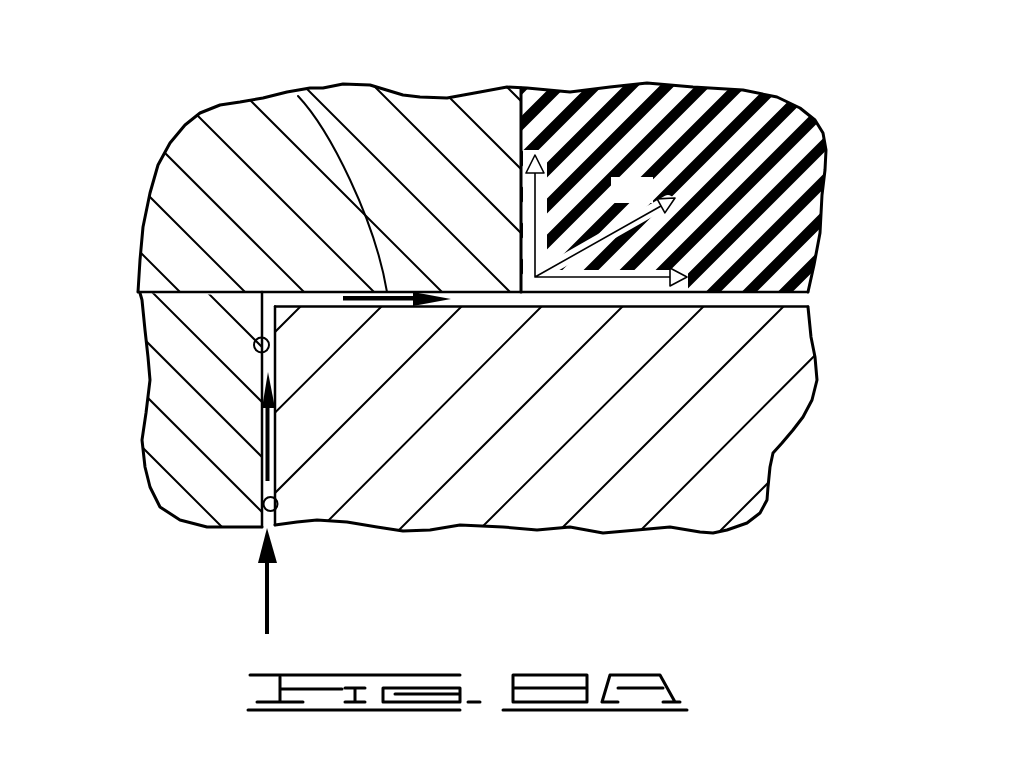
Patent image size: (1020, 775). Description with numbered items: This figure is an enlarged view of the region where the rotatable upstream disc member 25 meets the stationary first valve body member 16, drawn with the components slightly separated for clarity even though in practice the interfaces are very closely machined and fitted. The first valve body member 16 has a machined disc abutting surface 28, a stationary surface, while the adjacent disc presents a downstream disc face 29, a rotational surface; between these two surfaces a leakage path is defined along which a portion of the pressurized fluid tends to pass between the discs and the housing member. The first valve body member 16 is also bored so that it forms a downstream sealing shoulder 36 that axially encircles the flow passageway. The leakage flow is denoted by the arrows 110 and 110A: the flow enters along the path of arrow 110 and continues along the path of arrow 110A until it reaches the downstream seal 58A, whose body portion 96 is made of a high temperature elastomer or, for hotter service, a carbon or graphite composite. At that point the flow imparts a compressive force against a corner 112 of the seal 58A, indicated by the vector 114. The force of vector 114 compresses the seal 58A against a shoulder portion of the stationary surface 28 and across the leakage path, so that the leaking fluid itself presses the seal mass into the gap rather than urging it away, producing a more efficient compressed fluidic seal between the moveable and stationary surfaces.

The first valve body member 16 is at (792, 412).
The upstream disc member 25 is at (180, 385).
The disc abutting surface 28 is at (278, 507).
The downstream disc face 29 is at (254, 341).
The downstream sealing shoulder 36 is at (245, 292).
The downstream seal 58A is at (754, 77).
The body portion 96 is at (806, 190).
The leakage path arrow 110 is at (263, 462).
The leakage path arrow 110A is at (298, 96).
The corner of the seal 112 is at (520, 296).
The force vector 114 is at (640, 223).